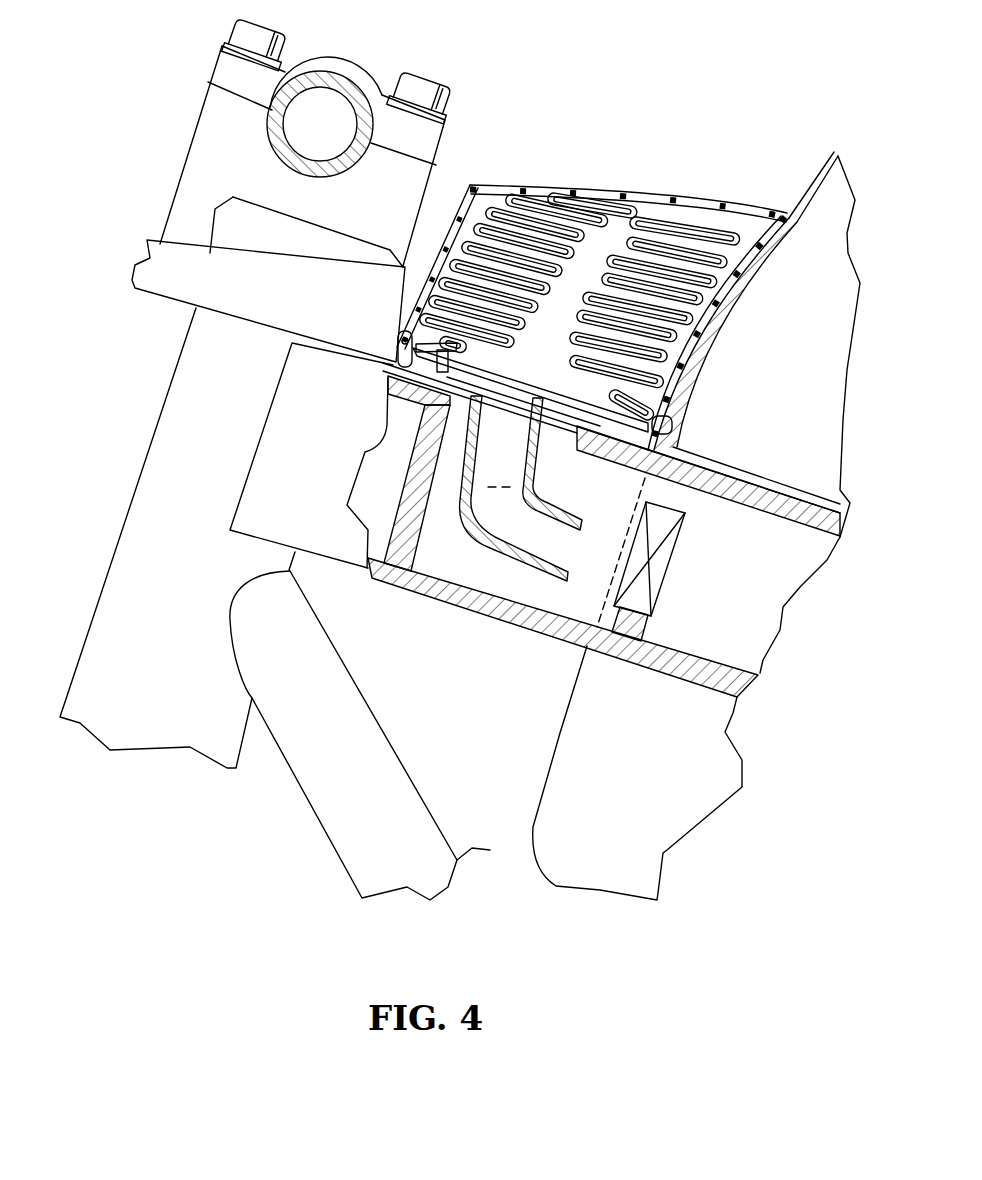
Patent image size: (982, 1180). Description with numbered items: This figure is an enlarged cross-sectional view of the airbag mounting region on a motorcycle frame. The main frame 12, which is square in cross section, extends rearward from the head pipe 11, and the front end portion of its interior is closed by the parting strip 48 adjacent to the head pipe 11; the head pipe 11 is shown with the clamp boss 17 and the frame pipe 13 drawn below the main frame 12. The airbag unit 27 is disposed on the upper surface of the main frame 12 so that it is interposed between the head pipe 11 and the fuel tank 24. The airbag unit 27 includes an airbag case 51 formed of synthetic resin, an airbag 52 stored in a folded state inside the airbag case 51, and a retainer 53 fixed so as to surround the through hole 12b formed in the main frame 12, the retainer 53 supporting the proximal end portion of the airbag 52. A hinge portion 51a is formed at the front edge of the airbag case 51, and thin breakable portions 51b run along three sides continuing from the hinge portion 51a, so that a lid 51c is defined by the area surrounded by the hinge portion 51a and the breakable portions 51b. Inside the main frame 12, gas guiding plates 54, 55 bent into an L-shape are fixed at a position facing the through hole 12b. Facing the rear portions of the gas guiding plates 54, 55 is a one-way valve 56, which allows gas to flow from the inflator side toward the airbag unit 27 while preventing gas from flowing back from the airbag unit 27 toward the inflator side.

The head pipe 11 is at (158, 487).
The main frame 12 is at (480, 611).
The through hole 12b is at (455, 413).
The frame pipe 13 is at (375, 780).
The pipe clamp boss 17 is at (335, 80).
The fuel tank 24 is at (825, 173).
The airbag unit 27 is at (668, 163).
The parting strip 48 is at (407, 500).
The airbag case 51 is at (593, 180).
The hinge portion 51a is at (480, 185).
The breakable portions 51b is at (772, 210).
The lid 51c is at (692, 193).
The airbag 52 is at (650, 205).
The retainer 53 is at (550, 388).
The gas guiding plate 54 is at (527, 567).
The gas guiding plate 55 is at (543, 510).
The one-way valve 56 is at (665, 558).